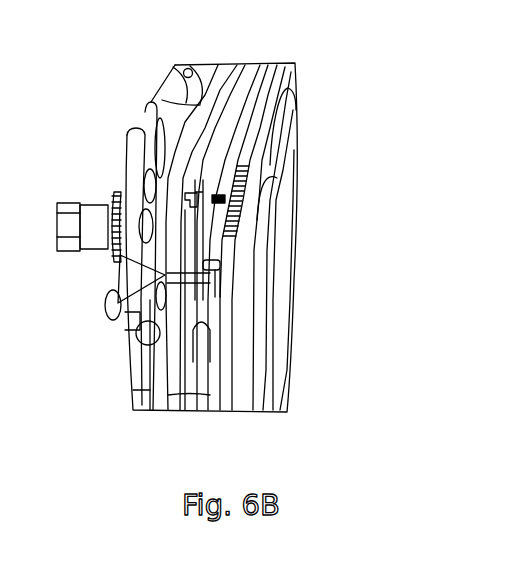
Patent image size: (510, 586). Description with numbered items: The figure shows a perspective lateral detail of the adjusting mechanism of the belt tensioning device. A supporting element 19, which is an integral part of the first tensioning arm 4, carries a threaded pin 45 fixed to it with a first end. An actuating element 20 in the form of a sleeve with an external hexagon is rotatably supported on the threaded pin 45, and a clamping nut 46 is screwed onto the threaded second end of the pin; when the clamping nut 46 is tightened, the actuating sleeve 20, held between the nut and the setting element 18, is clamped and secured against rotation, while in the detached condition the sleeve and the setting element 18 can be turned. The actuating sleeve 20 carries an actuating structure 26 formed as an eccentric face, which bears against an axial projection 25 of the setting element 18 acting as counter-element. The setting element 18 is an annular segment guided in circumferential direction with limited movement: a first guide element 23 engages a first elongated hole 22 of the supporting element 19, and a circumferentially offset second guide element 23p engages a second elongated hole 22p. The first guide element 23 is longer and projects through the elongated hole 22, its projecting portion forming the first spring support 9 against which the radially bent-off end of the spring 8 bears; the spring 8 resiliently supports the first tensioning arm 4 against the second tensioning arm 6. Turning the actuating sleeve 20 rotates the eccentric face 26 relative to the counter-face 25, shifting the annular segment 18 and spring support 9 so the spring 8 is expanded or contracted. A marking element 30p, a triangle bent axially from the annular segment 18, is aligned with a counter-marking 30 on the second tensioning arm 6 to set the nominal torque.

The first tensioning arm 4 is at (187, 68).
The spring 8 is at (195, 110).
The actuating element 20 is at (100, 197).
The clamping nut 46 is at (65, 213).
The actuating structure 26 is at (110, 267).
The axial projection 25 is at (112, 308).
The setting element 18 is at (112, 317).
The supporting element 19 is at (145, 388).
The second tensioning arm 6 is at (198, 387).
The first elongated hole 22 is at (133, 345).
The second elongated hole 22p is at (160, 138).
The first guide element 23 is at (155, 303).
The second guide element 23p is at (153, 168).
The threaded pin 45 is at (140, 232).
The counter-marking 30 is at (167, 280).
The marking element 30p is at (160, 265).
The first spring support 9 is at (153, 327).